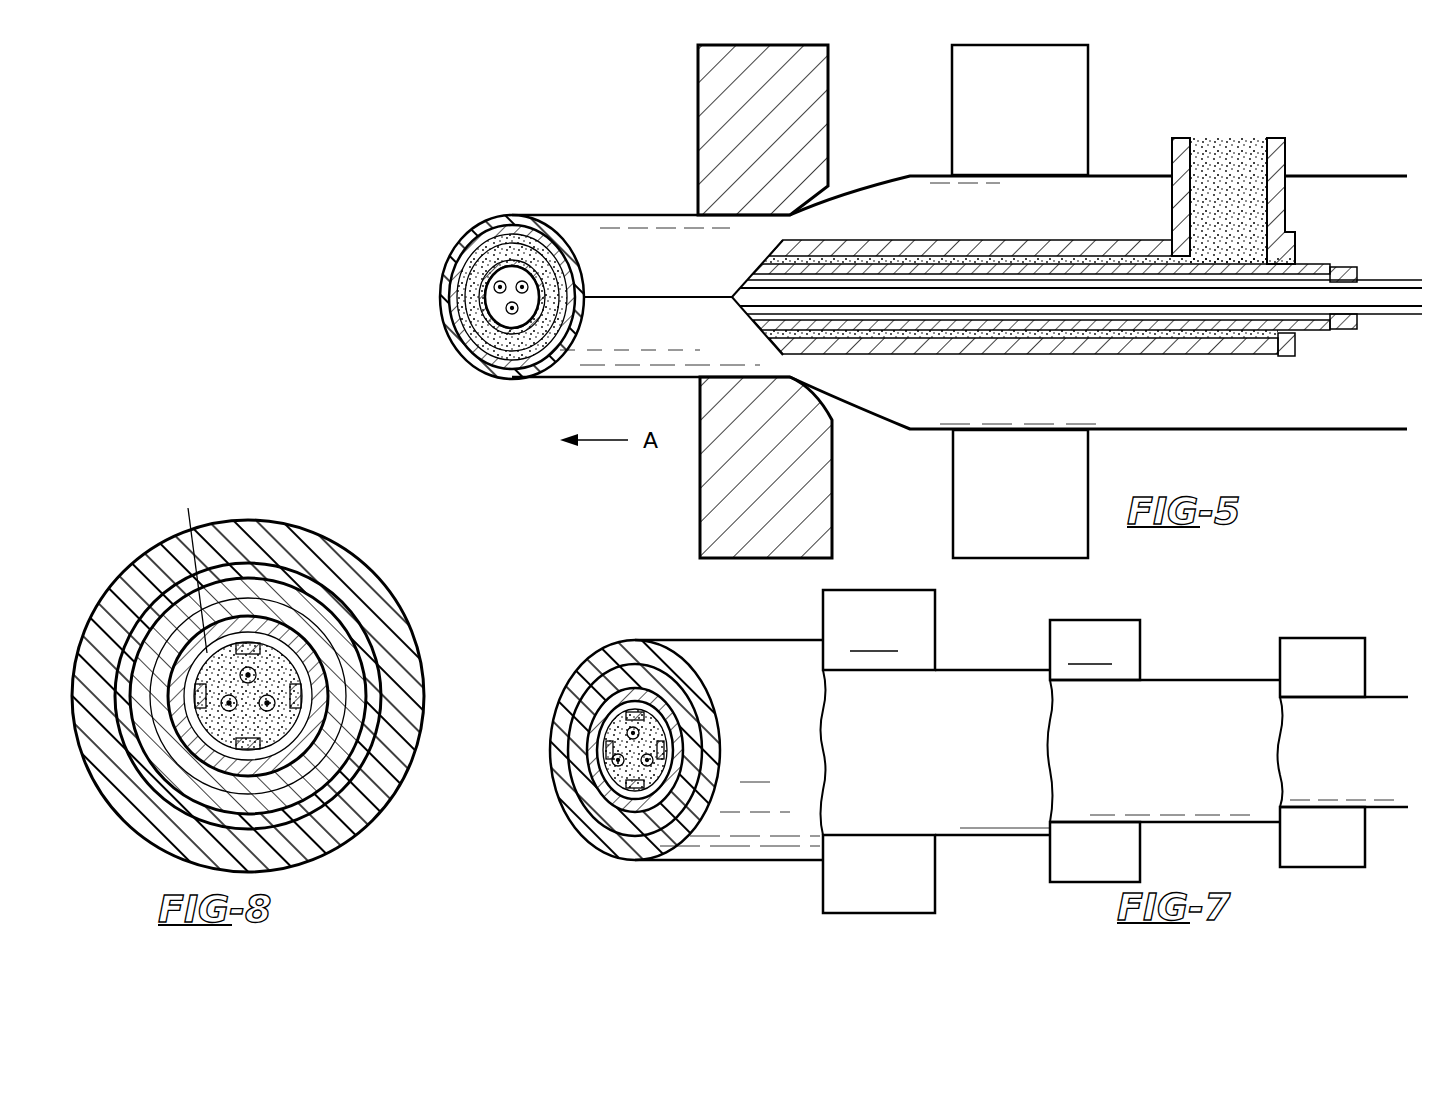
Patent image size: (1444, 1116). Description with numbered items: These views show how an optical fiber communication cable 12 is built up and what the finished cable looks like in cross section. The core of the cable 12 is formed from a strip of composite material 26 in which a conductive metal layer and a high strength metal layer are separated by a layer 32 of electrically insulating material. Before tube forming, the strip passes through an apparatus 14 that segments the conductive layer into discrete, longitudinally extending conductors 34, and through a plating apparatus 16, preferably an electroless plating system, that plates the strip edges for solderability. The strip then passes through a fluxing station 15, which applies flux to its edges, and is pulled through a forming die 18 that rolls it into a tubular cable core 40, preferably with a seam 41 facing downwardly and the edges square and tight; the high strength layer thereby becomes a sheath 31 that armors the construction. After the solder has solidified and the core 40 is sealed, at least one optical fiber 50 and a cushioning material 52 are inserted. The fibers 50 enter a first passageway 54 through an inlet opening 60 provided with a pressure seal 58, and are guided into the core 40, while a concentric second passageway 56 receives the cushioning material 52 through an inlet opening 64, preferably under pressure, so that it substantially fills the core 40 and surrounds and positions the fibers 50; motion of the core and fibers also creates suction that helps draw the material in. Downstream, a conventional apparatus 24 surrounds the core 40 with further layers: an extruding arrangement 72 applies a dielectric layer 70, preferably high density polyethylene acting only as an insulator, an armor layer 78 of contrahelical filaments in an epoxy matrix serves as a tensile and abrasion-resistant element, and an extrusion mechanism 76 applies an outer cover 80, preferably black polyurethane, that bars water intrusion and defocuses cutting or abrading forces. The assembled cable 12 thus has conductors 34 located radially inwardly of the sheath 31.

In FIG. 8, the optical fiber communication cable 12 is at (248, 518).
In FIG. 7, the segmenting apparatus 14 is at (1094, 751).
In FIG. 5, the fluxing station 15 is at (1084, 95).
In FIG. 7, the plating apparatus 16 is at (878, 751).
In FIG. 5, the forming die 18 is at (830, 82).
In FIG. 7, the layer-applying apparatus 24 is at (1148, 630).
In FIG. 5, the composite material 26 is at (1378, 196).
In FIG. 8, the high strength sheath 31 is at (306, 640).
In FIG. 8, the electrically insulating layer 32 is at (300, 668).
In FIG. 8, the conductors 34 is at (300, 690).
In FIG. 5, the tubular cable core 40 is at (636, 214).
In FIG. 7, the tubular cable core 40 is at (600, 833).
In FIG. 5, the seam 41 is at (650, 297).
In FIG. 8, the seam 41 is at (185, 568).
In FIG. 5, the optical fiber 50 is at (512, 307).
In FIG. 8, the optical fiber 50 is at (248, 678).
In FIG. 7, the optical fiber 50 is at (633, 738).
In FIG. 5, the cushioning material 52 is at (462, 274).
In FIG. 8, the cushioning material 52 is at (292, 724).
In FIG. 7, the cushioning material 52 is at (655, 733).
In FIG. 5, the first passageway 54 is at (472, 358).
In FIG. 5, the second passageway 56 is at (483, 250).
In FIG. 5, the pressure seal 58 is at (1358, 322).
In FIG. 5, the inlet opening 60 is at (1296, 337).
In FIG. 5, the inlet opening 64 is at (1228, 138).
In FIG. 7, the dielectric layer 70 is at (653, 697).
In FIG. 7, the extruding arrangement 72 is at (1338, 640).
In FIG. 8, the extrusion mechanism 76 is at (317, 623).
In FIG. 8, the armor layer 78 is at (317, 590).
In FIG. 7, the armor layer 78 is at (637, 670).
In FIG. 8, the outer cover 80 is at (287, 538).
In FIG. 7, the outer cover 80 is at (595, 663).